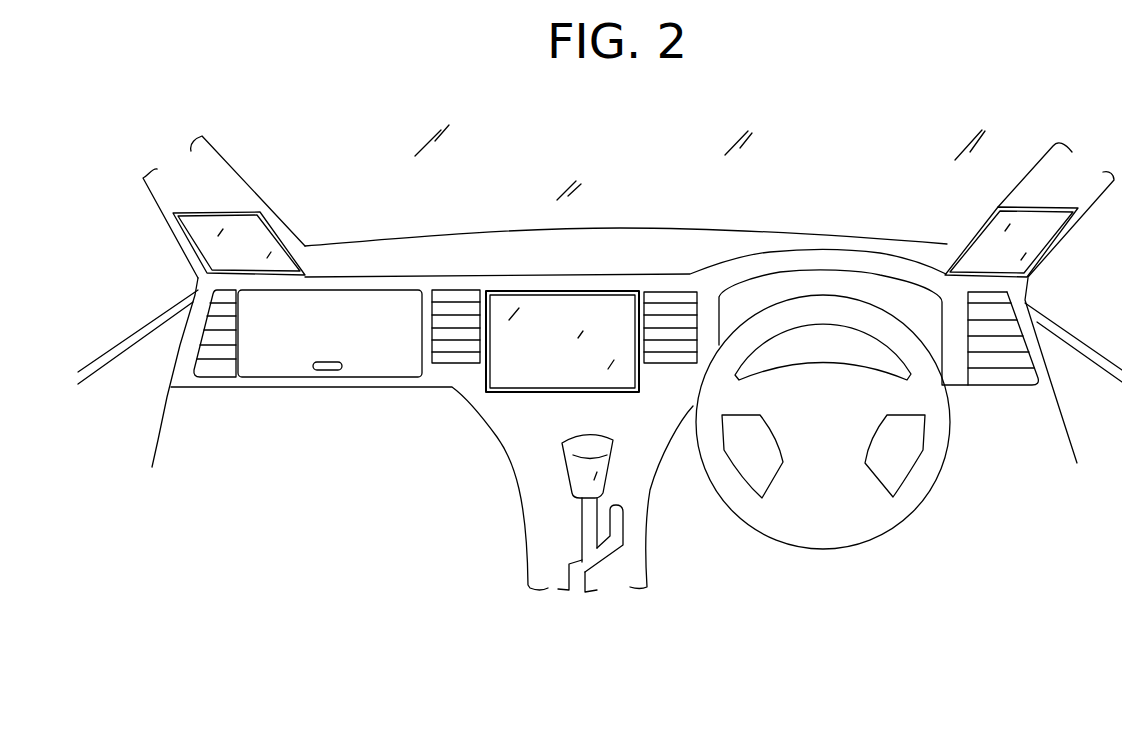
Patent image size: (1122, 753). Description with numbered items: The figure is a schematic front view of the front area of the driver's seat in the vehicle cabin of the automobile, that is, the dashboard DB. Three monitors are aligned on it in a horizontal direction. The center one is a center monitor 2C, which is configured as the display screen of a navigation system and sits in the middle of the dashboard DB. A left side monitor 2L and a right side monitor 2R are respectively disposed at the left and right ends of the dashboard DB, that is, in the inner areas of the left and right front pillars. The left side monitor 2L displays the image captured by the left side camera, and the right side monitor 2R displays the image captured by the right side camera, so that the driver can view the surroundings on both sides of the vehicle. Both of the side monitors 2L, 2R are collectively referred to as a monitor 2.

The monitor 2 is at (816, 187).
The left side monitor 2L is at (278, 236).
The center monitor 2C is at (587, 291).
The right side monitor 2R is at (973, 240).
The dashboard DB is at (465, 380).